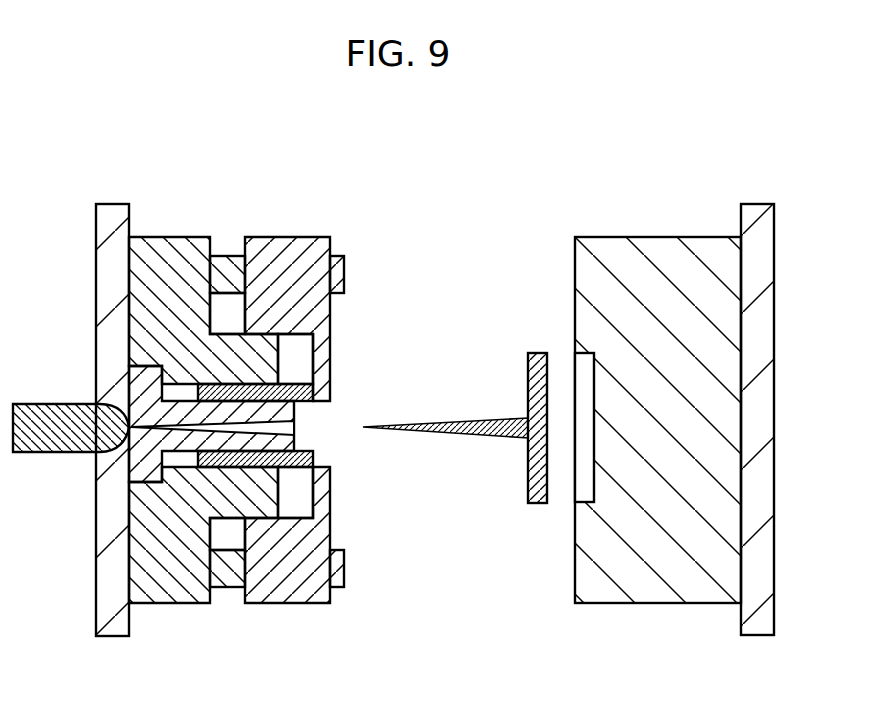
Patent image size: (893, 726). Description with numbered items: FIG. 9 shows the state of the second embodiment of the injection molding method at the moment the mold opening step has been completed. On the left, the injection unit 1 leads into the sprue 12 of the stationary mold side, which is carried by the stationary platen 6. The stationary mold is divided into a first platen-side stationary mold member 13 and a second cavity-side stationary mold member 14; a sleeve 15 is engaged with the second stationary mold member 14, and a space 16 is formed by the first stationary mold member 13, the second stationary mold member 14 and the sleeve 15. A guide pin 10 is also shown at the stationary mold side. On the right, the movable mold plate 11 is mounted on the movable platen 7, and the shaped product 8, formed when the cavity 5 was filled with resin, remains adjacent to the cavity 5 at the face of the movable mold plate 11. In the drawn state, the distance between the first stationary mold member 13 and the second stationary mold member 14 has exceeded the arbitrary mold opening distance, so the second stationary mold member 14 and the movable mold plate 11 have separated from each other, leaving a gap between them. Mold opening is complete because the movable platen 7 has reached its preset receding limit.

The injection unit 1 is at (40, 438).
The cavity 5 is at (586, 356).
The stationary platen 6 is at (120, 608).
The movable platen 7 is at (757, 233).
The shaped product 8 is at (537, 352).
The guide pin 10 is at (232, 263).
The movable mold plate 11 is at (692, 590).
The sprue 12 is at (147, 385).
The first platen-side stationary mold member 13 is at (177, 593).
The second cavity-side stationary mold member 14 is at (287, 592).
The sleeve 15 is at (260, 388).
The space 16 is at (295, 357).